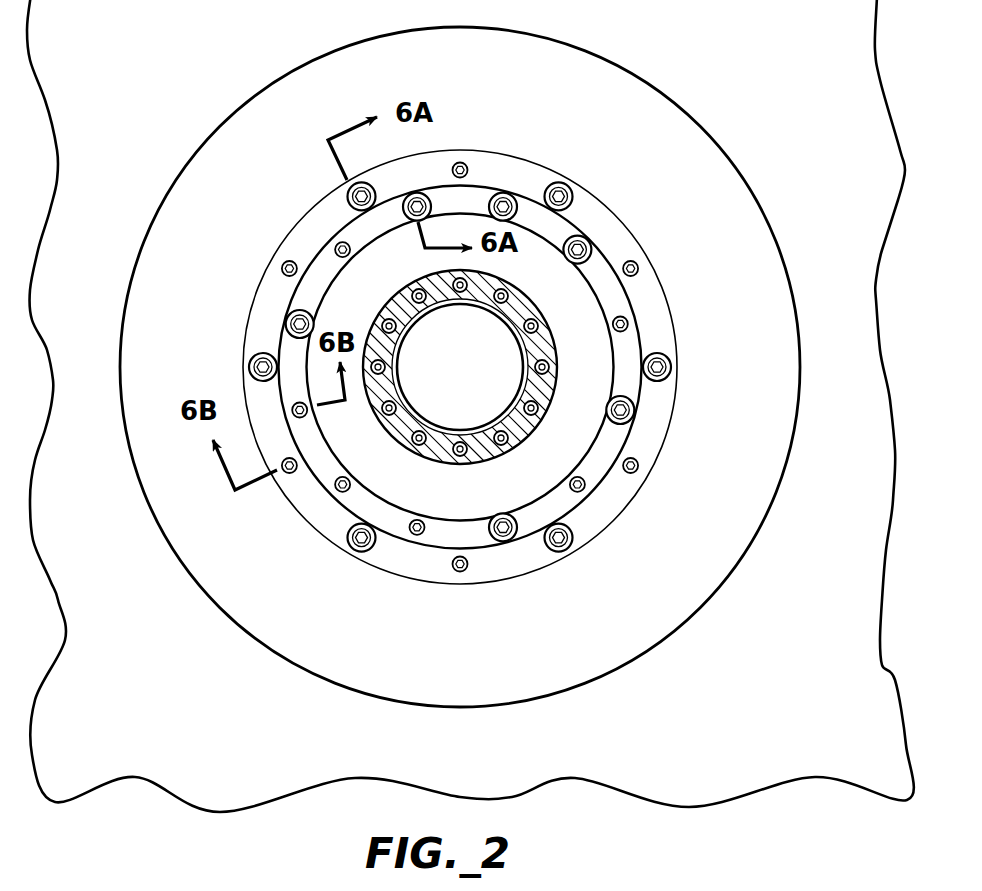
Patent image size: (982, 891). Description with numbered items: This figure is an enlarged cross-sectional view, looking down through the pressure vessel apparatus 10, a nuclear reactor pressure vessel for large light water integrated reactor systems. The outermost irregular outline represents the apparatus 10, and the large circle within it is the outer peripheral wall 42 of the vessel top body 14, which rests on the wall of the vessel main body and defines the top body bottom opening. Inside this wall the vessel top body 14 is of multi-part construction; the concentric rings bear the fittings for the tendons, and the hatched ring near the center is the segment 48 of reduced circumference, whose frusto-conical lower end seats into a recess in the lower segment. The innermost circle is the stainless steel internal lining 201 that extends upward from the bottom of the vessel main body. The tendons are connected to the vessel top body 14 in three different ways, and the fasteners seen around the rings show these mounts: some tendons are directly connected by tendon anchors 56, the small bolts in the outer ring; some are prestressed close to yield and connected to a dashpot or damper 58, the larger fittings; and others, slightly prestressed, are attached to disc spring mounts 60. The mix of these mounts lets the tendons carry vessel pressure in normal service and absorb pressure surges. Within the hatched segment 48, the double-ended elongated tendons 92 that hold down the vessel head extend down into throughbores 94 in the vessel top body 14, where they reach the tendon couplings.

The pressure vessel apparatus 10 is at (674, 60).
The vessel top body 14 is at (531, 158).
The outer peripheral wall 42 is at (730, 168).
The segment 48 is at (512, 281).
The tendon anchors 56 is at (285, 262).
The dashpot or damper 58 is at (347, 185).
The disc spring mounts 60 is at (405, 220).
The double-ended elongated tendons 92 is at (520, 326).
The throughbores 94 is at (545, 386).
The internal lining 201 is at (404, 318).